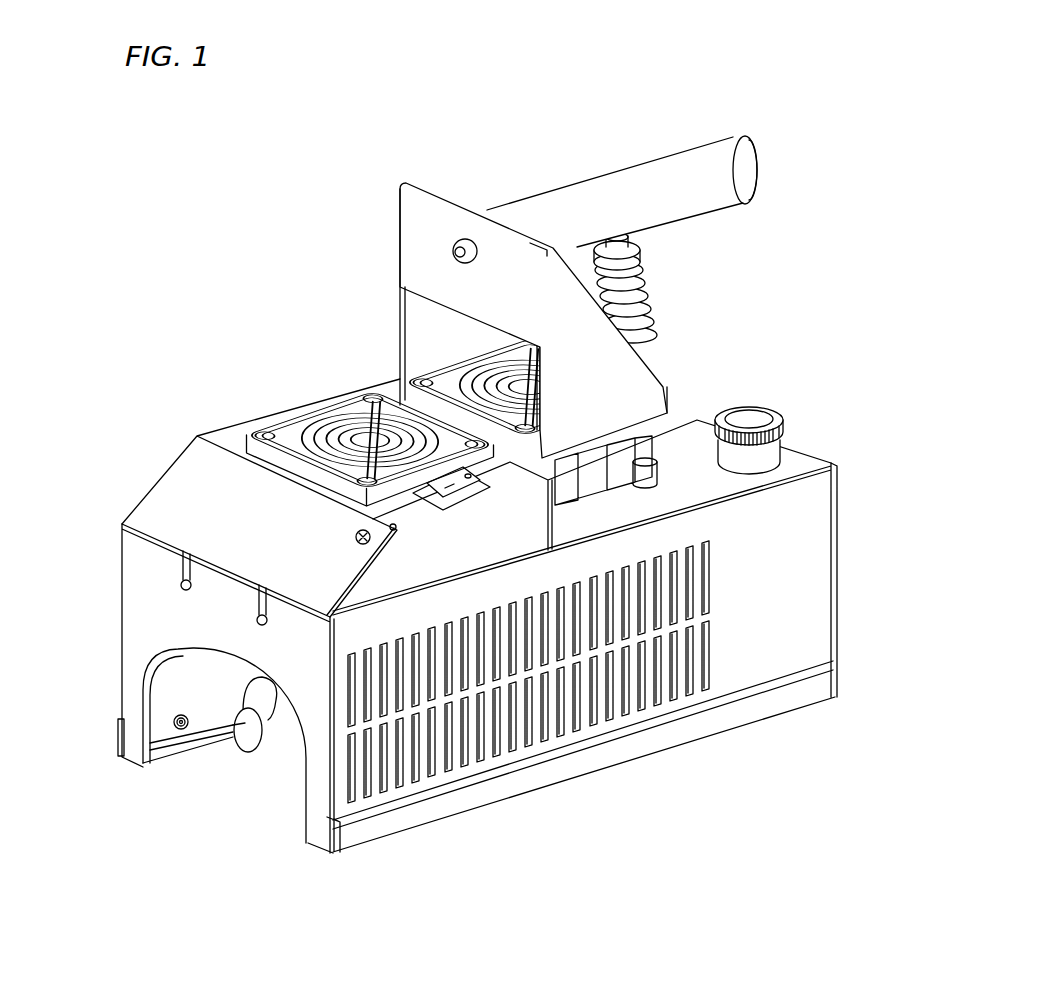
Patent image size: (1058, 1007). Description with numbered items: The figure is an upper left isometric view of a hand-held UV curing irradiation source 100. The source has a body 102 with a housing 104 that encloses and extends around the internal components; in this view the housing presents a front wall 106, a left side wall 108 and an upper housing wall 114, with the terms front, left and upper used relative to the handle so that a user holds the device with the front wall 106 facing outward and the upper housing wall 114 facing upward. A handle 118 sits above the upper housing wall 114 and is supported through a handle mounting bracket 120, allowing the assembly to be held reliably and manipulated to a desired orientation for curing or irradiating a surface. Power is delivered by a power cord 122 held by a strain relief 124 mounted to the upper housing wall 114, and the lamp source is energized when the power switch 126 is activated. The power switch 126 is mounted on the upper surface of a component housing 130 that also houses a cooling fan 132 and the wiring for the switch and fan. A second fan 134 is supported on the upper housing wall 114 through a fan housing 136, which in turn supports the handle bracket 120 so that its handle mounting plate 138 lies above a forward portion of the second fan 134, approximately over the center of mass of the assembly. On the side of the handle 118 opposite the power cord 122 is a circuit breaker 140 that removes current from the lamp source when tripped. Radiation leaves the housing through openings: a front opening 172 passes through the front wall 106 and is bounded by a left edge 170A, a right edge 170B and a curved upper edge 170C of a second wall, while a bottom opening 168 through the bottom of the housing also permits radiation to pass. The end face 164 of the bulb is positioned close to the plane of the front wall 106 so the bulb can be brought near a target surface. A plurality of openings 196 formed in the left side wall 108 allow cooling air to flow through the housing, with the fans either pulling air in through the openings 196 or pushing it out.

The UV curing irradiation source 100 is at (253, 163).
The body 102 is at (137, 447).
The housing 104 is at (140, 621).
The front wall 106 is at (136, 654).
The left side wall 108 is at (734, 673).
The upper housing wall 114 is at (806, 463).
The handle 118 is at (591, 179).
The handle mounting bracket 120 is at (406, 226).
The power cord 122 is at (640, 250).
The strain relief 124 is at (642, 296).
The power switch 126 is at (431, 505).
The component housing 130 is at (276, 410).
The cooling fan 132 is at (379, 392).
The second fan 134 is at (452, 367).
The fan housing 136 is at (587, 483).
The handle mounting plate 138 is at (406, 256).
The circuit breaker 140 is at (756, 413).
The end face of the bulb 164 is at (248, 736).
The bottom opening 168 is at (287, 822).
The left edge 170A is at (303, 792).
The right edge 170B is at (143, 766).
The curved upper edge 170C is at (194, 652).
The front opening 172 is at (172, 700).
The openings 196 is at (752, 560).